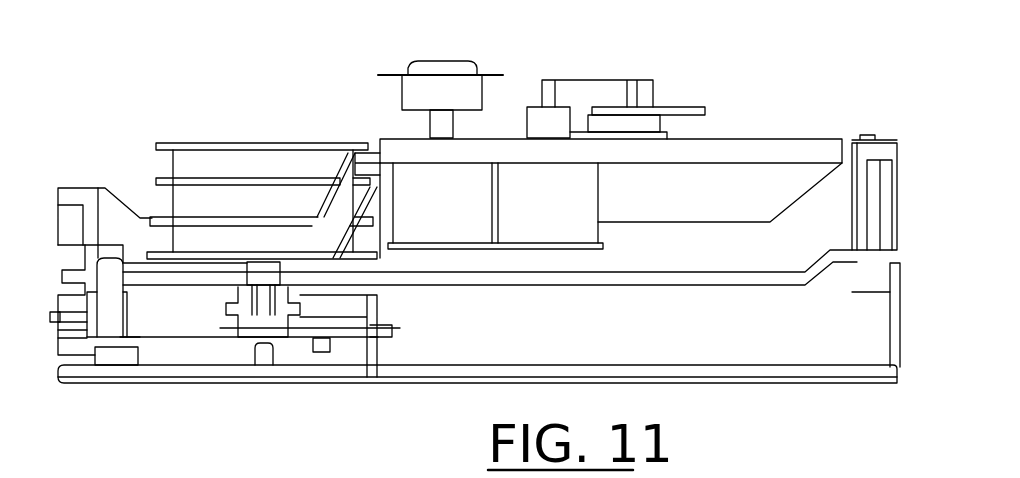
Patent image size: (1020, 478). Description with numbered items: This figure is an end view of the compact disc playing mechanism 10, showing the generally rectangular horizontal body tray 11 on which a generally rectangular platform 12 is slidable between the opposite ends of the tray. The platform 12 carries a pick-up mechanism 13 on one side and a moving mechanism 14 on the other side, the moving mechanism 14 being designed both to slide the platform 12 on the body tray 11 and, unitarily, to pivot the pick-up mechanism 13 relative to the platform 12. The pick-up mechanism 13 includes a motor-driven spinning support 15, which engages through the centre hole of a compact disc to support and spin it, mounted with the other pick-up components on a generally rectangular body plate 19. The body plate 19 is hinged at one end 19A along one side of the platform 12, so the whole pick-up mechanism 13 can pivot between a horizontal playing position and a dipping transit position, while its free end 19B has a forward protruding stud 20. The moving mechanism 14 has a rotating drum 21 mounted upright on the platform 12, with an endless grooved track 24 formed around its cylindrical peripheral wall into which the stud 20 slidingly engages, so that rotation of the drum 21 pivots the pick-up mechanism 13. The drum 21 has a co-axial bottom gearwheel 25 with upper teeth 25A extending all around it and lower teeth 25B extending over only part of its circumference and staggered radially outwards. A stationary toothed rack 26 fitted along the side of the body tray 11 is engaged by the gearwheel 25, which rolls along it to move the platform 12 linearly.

The compact disc playing mechanism 10 is at (782, 52).
The body tray 11 is at (748, 387).
The platform 12 is at (653, 282).
The pick-up mechanism 13 is at (680, 66).
The moving mechanism 14 is at (138, 138).
The spinning support 15 is at (492, 75).
The body plate 19 is at (688, 150).
The hinged end of body plate 19A is at (825, 150).
The free end of body plate 19B is at (402, 150).
The stud 20 is at (360, 167).
The rotating drum 21 is at (188, 143).
The endless grooved track 24 is at (333, 210).
The bottom gearwheel 25 is at (300, 333).
The upper teeth 25A is at (377, 327).
The lower teeth 25B is at (392, 333).
The stationary toothed rack 26 is at (133, 320).